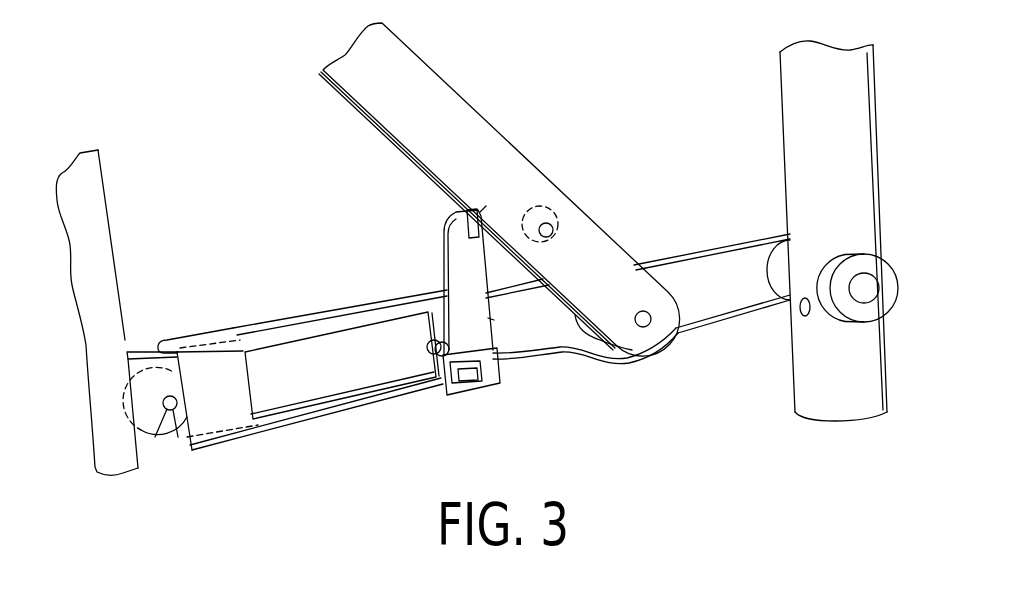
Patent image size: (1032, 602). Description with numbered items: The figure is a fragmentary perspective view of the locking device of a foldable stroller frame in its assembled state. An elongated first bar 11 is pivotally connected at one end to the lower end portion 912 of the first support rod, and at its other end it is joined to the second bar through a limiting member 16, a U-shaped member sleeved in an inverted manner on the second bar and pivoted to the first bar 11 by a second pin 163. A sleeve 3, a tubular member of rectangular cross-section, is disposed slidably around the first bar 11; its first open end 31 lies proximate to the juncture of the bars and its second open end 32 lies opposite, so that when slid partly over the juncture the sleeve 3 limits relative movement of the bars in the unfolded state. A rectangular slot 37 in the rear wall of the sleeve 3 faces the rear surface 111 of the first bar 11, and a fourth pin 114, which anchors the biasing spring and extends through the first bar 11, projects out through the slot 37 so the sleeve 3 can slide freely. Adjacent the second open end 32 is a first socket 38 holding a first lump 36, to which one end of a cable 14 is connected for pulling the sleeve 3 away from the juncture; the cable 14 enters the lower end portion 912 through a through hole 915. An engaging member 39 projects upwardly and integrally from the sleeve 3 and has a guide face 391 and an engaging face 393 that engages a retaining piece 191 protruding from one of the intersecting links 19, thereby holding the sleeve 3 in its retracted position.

The intersecting links 19 is at (440, 97).
The guide face 391 is at (489, 200).
The engaging face 393 is at (463, 210).
The engaging member 39 is at (453, 257).
The retaining piece 191 is at (553, 207).
The lower end portion 912 is at (813, 122).
The through hole 915 is at (803, 298).
The limiting member 16 is at (138, 343).
The sleeve 3 is at (303, 320).
The fourth pin 114 is at (427, 352).
The second pin 163 is at (169, 412).
The first open end 31 is at (177, 453).
The rear surface 111 is at (278, 385).
The rectangular slot 37 is at (330, 387).
The first socket 38 is at (467, 382).
The first lump 36 is at (481, 381).
The second open end 32 is at (493, 320).
The first bar 11 is at (540, 323).
The cable 14 is at (631, 351).